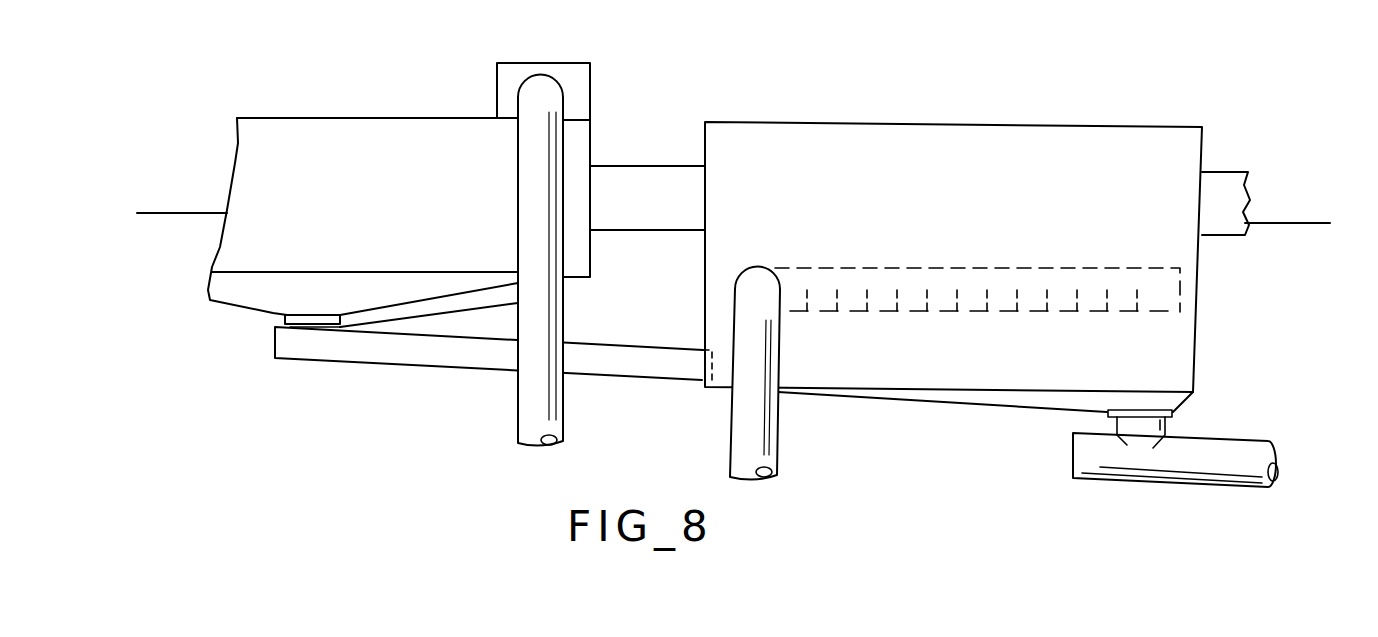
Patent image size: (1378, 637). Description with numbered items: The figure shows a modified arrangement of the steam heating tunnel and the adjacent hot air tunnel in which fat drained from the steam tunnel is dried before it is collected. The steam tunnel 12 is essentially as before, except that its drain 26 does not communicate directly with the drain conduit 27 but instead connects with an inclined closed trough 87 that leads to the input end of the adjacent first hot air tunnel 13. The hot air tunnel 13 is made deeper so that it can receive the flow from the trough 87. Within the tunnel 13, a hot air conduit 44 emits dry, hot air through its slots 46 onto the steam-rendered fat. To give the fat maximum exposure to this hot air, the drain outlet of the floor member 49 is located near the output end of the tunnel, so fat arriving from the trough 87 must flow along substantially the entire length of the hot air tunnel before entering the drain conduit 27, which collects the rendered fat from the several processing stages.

The steam tunnel 12 is at (352, 95).
The first hot air tunnel 13 is at (935, 117).
The drain 26 is at (380, 324).
The inclined closed trough 87 is at (602, 342).
The hot air conduit 44 is at (1013, 267).
The slots 46 is at (1140, 296).
The floor member 49 is at (963, 407).
The drain conduit 27 is at (1257, 440).